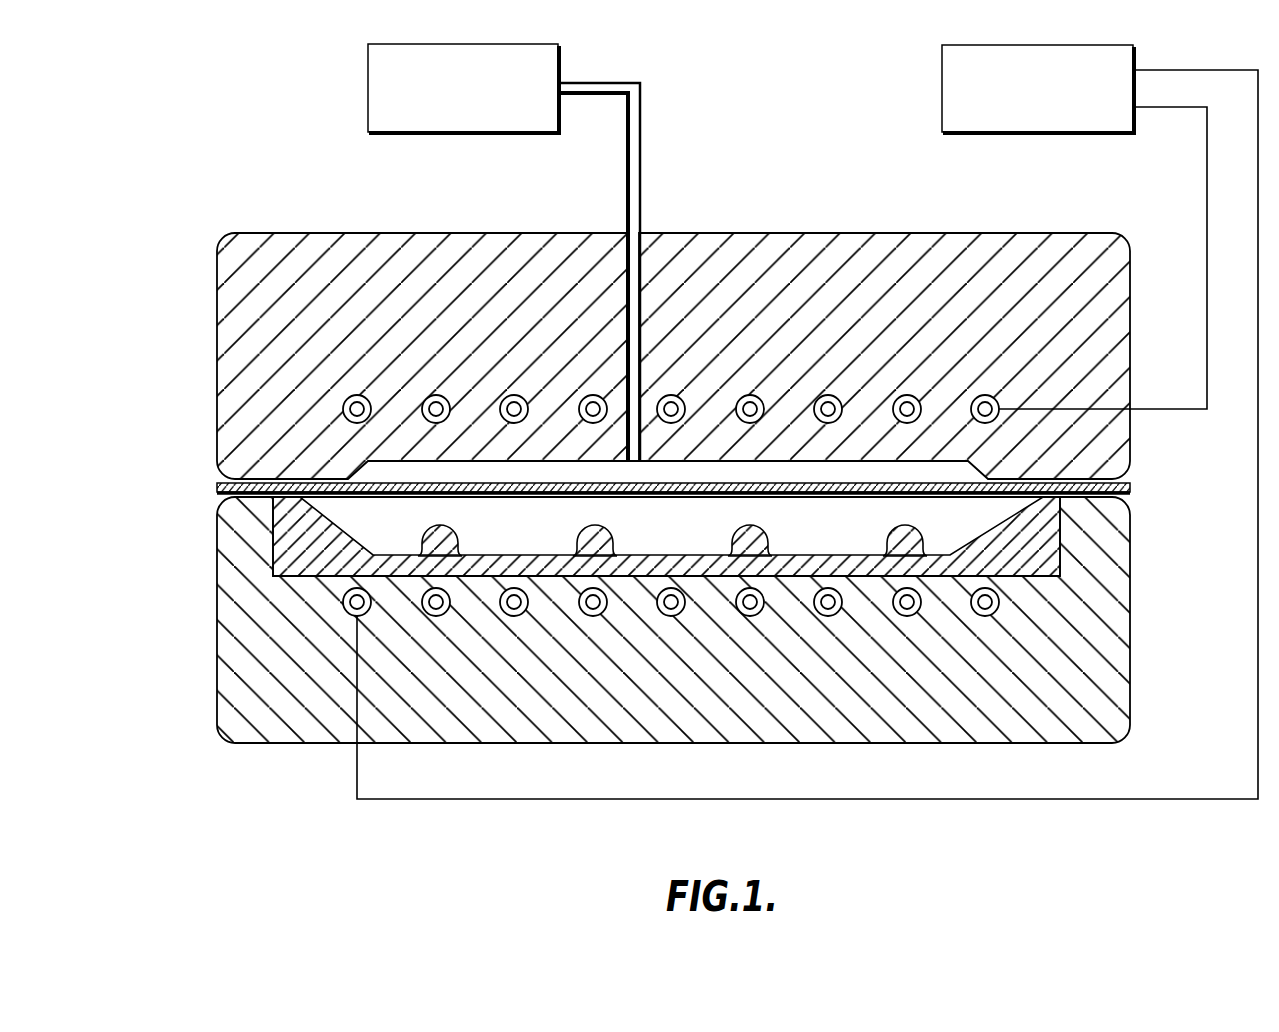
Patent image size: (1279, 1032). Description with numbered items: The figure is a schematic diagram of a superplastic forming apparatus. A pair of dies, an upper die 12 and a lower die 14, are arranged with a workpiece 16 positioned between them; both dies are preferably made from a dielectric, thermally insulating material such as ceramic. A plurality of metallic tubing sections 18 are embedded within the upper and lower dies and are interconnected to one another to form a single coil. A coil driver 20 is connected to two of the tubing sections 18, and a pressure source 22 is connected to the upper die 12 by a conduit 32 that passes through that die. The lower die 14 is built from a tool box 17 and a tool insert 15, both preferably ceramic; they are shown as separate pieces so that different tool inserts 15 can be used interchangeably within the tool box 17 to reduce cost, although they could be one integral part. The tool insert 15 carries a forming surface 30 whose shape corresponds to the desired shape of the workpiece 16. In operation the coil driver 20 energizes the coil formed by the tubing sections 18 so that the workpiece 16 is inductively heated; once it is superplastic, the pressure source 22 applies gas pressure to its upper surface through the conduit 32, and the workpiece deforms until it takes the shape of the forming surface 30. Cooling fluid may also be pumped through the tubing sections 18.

The upper die 12 is at (237, 350).
The lower die 14 is at (624, 652).
The tool insert 15 is at (589, 536).
The workpiece 16 is at (493, 496).
The tool box 17 is at (277, 724).
The metallic tubing sections 18 is at (751, 395).
The coil driver 20 is at (942, 84).
The pressure source 22 is at (368, 82).
The forming surface 30 is at (706, 539).
The conduit 32 is at (621, 262).